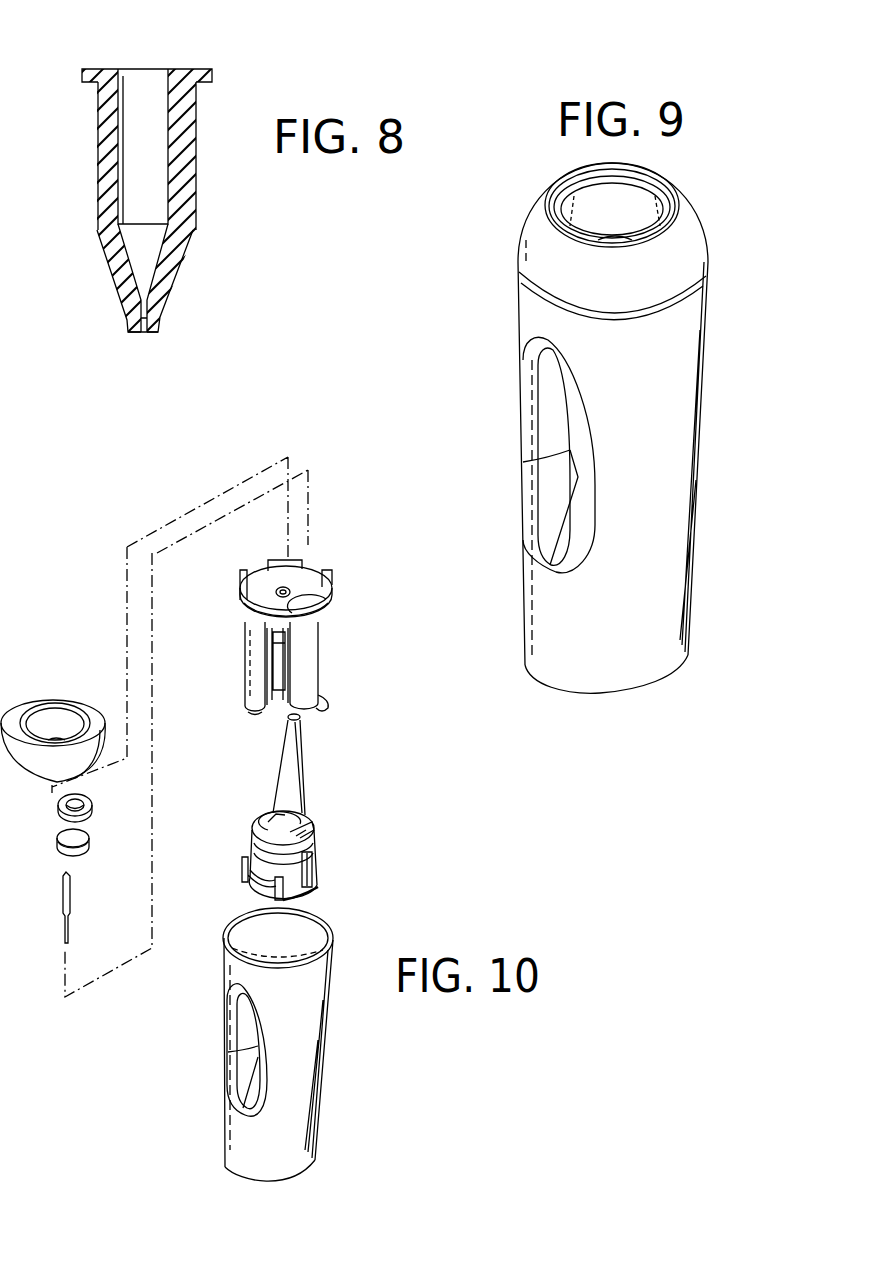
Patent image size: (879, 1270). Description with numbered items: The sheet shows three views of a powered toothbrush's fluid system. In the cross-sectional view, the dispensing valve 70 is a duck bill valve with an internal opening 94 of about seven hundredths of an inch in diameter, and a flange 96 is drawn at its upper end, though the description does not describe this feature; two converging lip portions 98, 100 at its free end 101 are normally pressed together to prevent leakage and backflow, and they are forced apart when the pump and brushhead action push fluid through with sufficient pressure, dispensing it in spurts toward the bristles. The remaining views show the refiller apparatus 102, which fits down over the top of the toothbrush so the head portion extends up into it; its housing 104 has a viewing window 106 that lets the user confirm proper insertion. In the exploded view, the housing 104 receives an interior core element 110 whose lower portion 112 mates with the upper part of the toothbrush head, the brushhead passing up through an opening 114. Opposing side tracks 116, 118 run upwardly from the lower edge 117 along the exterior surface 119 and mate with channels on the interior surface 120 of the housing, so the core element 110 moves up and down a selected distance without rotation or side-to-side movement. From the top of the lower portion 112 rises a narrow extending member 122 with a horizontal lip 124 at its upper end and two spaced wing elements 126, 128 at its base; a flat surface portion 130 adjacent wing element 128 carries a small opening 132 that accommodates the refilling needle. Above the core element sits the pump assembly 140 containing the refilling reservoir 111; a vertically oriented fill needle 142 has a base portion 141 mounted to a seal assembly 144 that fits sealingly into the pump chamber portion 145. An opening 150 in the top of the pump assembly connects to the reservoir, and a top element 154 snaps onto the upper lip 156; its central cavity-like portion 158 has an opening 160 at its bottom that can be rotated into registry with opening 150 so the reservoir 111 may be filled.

In FIG. 8, the dispensing valve 70 is at (80, 155).
In FIG. 8, the internal opening 94 is at (169, 150).
In FIG. 8, the flange 96 is at (187, 69).
In FIG. 8, the lip portion 98 is at (117, 272).
In FIG. 8, the lip portion 100 is at (163, 268).
In FIG. 8, the free end 101 is at (157, 333).
In FIG. 9, the refiller apparatus 102 is at (688, 412).
In FIG. 9, the housing 104 is at (667, 583).
In FIG. 10, the housing 104 is at (280, 1044).
In FIG. 9, the viewing window 106 is at (550, 473).
In FIG. 10, the core element 110 is at (244, 815).
In FIG. 10, the refilling reservoir 111 is at (243, 699).
In FIG. 10, the lower portion 112 is at (255, 857).
In FIG. 10, the opening 114 is at (280, 812).
In FIG. 10, the side track 116 is at (303, 896).
In FIG. 10, the lower edge 117 is at (312, 882).
In FIG. 10, the side track 118 is at (256, 833).
In FIG. 10, the exterior surface 119 is at (250, 866).
In FIG. 10, the interior surface 120 is at (262, 937).
In FIG. 10, the extending member 122 is at (294, 764).
In FIG. 10, the horizontal lip 124 is at (287, 717).
In FIG. 10, the wing element 126 is at (270, 820).
In FIG. 10, the wing element 128 is at (300, 823).
In FIG. 10, the flat surface portion 130 is at (310, 846).
In FIG. 10, the opening 132 is at (306, 829).
In FIG. 10, the pump assembly 140 is at (230, 642).
In FIG. 10, the base portion 141 is at (91, 838).
In FIG. 10, the fill needle 142 is at (70, 885).
In FIG. 10, the seal assembly 144 is at (93, 804).
In FIG. 10, the pump chamber portion 145 is at (322, 668).
In FIG. 10, the opening 150 is at (290, 588).
In FIG. 10, the top element 154 is at (70, 716).
In FIG. 10, the upper lip 156 is at (245, 588).
In FIG. 10, the cavity-like portion 158 is at (45, 710).
In FIG. 10, the opening 160 is at (61, 736).